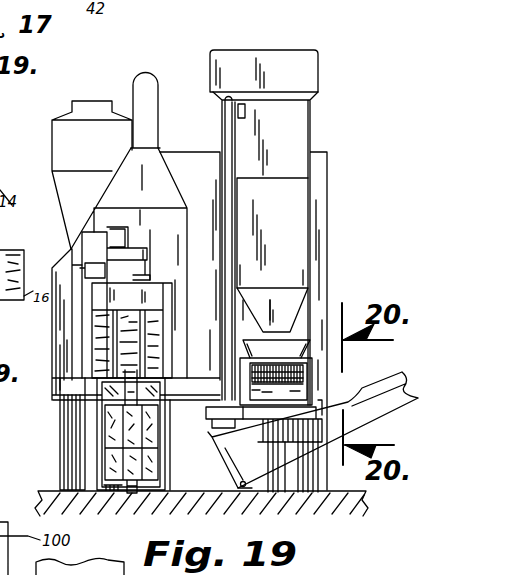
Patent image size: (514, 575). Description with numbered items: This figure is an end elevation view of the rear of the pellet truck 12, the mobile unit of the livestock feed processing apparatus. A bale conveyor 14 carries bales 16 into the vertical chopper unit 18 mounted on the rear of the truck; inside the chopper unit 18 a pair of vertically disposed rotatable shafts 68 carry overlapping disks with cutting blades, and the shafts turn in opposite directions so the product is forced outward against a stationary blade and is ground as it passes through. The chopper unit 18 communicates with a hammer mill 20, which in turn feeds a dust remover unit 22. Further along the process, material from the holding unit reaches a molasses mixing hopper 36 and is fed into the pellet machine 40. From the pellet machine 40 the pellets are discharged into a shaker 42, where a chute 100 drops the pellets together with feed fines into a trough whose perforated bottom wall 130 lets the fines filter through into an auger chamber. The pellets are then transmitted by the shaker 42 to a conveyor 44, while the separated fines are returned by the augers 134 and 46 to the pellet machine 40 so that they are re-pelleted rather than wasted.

The pellet truck 12 is at (330, 118).
The bale conveyor 14 is at (90, 480).
The bales 16 is at (163, 490).
The vertical chopper unit 18 is at (156, 295).
The hammer mill 20 is at (67, 247).
The dust remover unit 22 is at (77, 128).
The molasses mixing hopper 36 is at (290, 62).
The pellet machine 40 is at (295, 215).
The shaker 42 is at (320, 373).
The conveyor 44 is at (373, 420).
The auger 46 is at (220, 134).
The rotatable shafts 68 is at (115, 339).
The chute 100 is at (290, 303).
The bottom wall 130 is at (298, 364).
The auger 134 is at (255, 415).